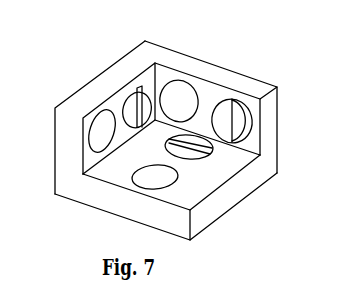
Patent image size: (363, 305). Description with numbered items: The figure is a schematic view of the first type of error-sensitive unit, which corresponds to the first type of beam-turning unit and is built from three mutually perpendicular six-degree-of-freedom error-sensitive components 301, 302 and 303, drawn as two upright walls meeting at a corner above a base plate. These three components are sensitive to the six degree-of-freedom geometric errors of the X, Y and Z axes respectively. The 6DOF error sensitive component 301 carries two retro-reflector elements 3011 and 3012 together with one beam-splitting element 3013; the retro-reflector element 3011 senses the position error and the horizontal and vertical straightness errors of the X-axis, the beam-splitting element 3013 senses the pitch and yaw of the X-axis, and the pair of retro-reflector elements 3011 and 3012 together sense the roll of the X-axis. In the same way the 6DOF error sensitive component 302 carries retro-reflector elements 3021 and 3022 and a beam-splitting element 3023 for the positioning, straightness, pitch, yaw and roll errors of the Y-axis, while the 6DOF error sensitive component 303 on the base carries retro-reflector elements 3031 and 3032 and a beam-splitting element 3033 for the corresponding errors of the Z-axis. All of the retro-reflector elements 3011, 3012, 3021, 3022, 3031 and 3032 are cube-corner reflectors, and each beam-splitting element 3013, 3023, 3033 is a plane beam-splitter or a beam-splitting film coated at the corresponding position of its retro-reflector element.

The 6DOF error sensitive component 301 is at (55, 152).
The 6DOF error sensitive component 302 is at (272, 122).
The 6DOF error sensitive component 303 is at (123, 209).
The retro-reflector element 3011 is at (100, 120).
The retro-reflector element 3012 is at (127, 108).
The beam-splitting element 3013 is at (143, 88).
The retro-reflector element 3021 is at (178, 92).
The retro-reflector element 3022 is at (220, 107).
The beam-splitting element 3023 is at (237, 117).
The retro-reflector element 3031 is at (153, 178).
The retro-reflector element 3032 is at (187, 152).
The beam-splitting element 3033 is at (211, 150).